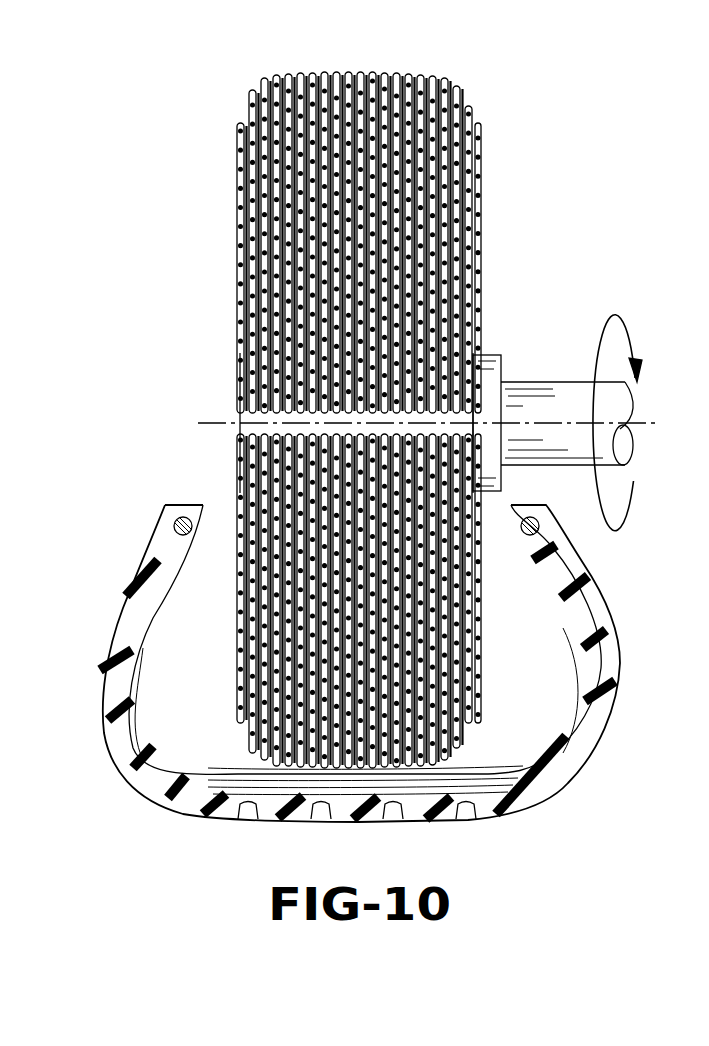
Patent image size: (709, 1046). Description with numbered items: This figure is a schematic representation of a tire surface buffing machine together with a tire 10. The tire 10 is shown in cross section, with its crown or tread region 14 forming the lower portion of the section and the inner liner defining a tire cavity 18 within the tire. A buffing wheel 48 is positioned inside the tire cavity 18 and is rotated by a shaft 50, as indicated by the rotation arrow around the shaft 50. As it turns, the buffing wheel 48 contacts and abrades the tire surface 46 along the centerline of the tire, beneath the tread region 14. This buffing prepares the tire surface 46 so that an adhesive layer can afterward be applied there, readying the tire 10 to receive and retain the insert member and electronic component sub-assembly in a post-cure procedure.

The tire 10 is at (533, 808).
The tread region 14 is at (140, 755).
The tire cavity 18 is at (505, 697).
The tire surface 46 is at (283, 798).
The buffing wheel 48 is at (390, 215).
The shaft 50 is at (538, 373).